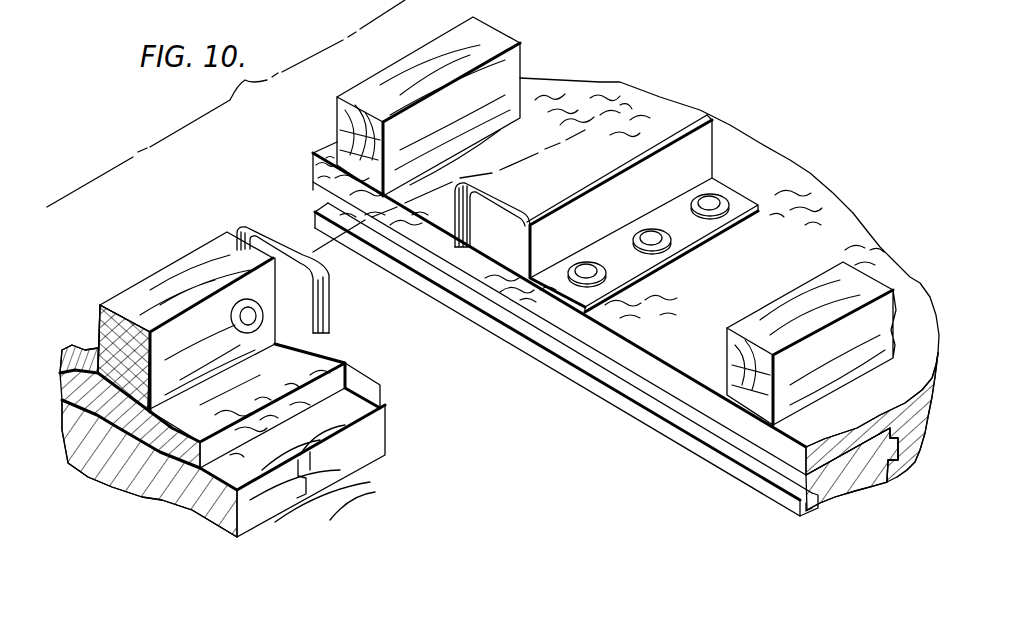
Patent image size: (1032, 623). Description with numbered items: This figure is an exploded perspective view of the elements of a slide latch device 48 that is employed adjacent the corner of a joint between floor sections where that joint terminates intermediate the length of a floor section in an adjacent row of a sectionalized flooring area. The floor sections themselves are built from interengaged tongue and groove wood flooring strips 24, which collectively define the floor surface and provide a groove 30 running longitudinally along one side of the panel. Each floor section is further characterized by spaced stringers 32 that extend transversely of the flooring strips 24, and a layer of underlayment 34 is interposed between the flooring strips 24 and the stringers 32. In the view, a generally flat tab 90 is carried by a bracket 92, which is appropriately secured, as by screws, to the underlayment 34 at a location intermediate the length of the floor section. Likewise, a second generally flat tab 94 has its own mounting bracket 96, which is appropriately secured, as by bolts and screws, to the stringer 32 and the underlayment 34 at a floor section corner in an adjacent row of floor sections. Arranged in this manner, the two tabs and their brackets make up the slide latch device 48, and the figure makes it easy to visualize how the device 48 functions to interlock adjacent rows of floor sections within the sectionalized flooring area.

The tongue and groove wood flooring strips 24 is at (907, 458).
The groove 30 is at (753, 470).
The stringer 32 is at (500, 43).
The underlayment 34 is at (778, 160).
The slide latch device 48 is at (419, 331).
The flat tab 90 is at (495, 218).
The bracket 92 is at (647, 167).
The flat tab 94 is at (288, 268).
The mounting bracket 96 is at (90, 347).